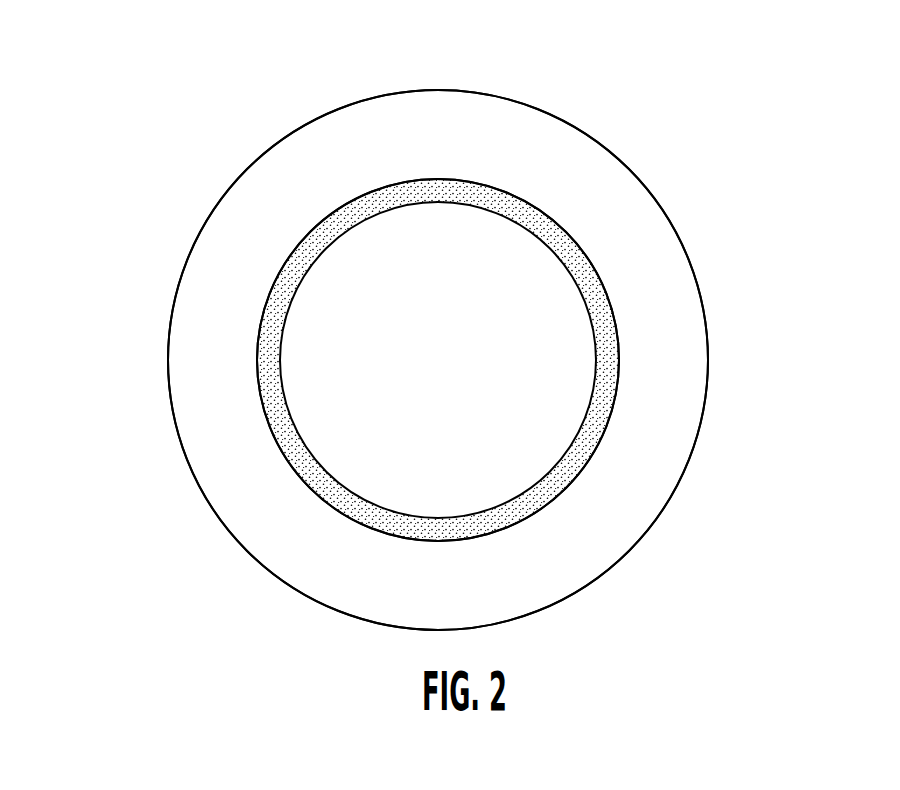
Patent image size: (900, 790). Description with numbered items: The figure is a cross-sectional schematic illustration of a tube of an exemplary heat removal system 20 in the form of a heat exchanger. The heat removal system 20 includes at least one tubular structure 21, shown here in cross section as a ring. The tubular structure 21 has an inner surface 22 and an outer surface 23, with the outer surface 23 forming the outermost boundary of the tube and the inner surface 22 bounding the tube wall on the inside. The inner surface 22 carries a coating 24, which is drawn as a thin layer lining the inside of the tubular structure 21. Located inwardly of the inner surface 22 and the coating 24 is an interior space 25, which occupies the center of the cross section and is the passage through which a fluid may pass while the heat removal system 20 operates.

The heat removal system 20 is at (487, 331).
The tubular structure 21 is at (442, 127).
The inner surface 22 is at (552, 218).
The outer surface 23 is at (272, 147).
The coating 24 is at (278, 420).
The interior space 25 is at (568, 345).